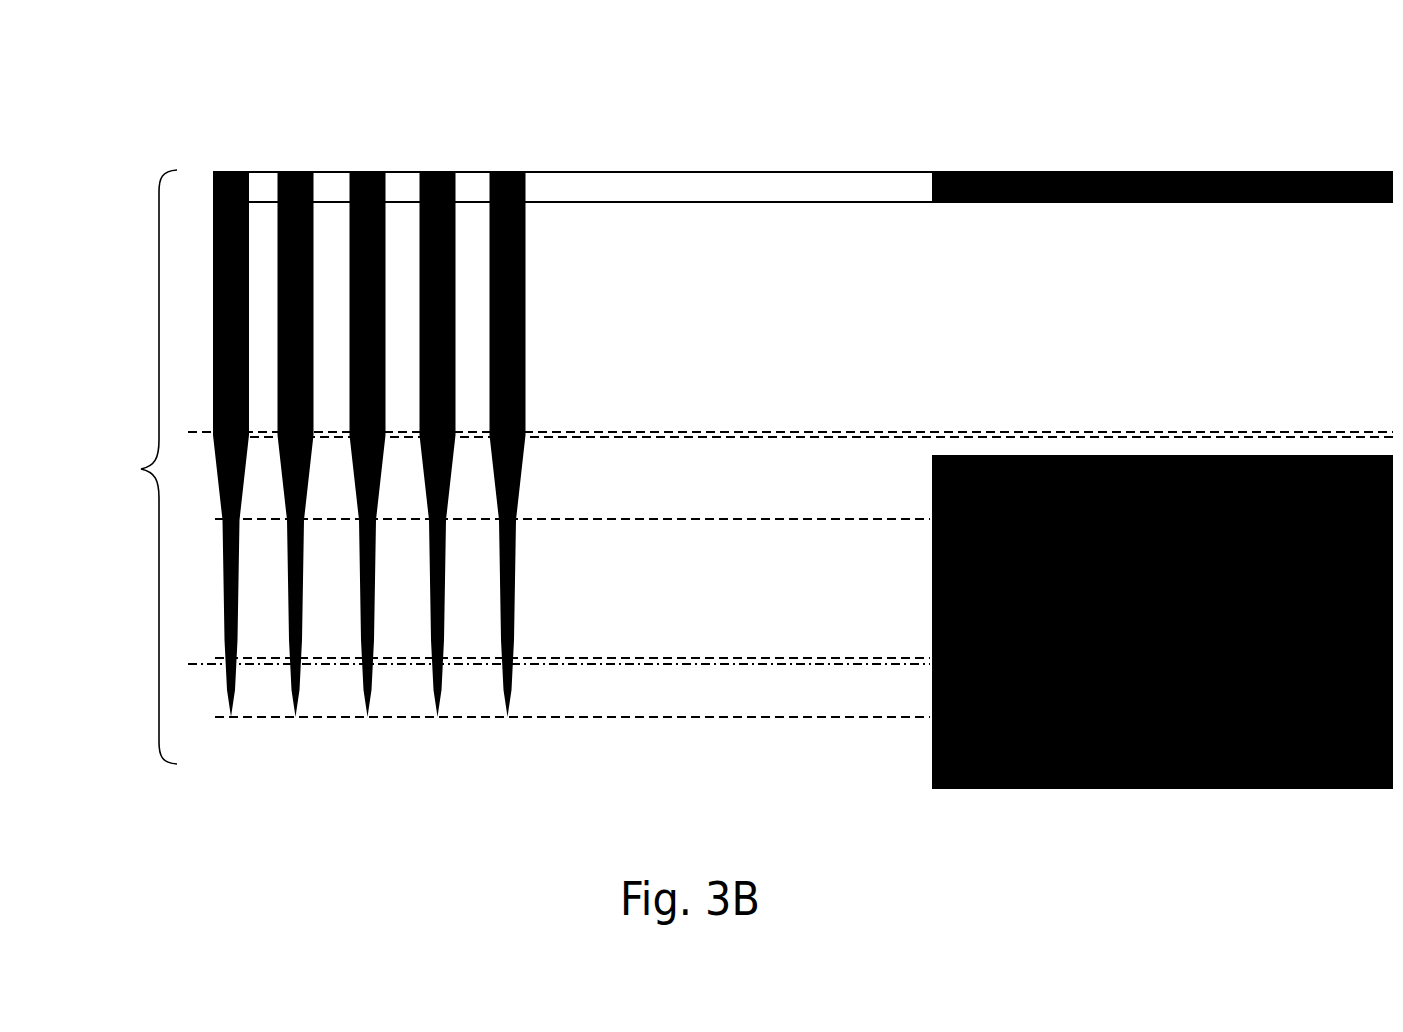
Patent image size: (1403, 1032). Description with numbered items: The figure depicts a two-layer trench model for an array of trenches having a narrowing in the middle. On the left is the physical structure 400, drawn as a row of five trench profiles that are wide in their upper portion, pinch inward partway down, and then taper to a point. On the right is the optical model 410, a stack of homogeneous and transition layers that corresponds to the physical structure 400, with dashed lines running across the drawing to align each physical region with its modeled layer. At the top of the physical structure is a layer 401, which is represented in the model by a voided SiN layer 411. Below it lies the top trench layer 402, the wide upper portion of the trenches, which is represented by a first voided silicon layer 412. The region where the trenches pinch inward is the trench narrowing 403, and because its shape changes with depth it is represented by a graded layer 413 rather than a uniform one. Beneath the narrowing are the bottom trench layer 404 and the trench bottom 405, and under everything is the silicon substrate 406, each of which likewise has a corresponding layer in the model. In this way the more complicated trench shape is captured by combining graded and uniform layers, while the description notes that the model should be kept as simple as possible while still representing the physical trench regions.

The physical structure 400 is at (313, 411).
The layer 401 is at (803, 190).
The top trench layer 402 is at (790, 374).
The trench narrowing 403 is at (572, 486).
The bottom trench layer 404 is at (559, 612).
The trench bottom 405 is at (572, 695).
The silicon substrate 406 is at (572, 753).
The optical model 410 is at (1162, 405).
The voided SiN layer 411 is at (1162, 189).
The first voided silicon layer 412 is at (1162, 328).
The graded layer 413 is at (1162, 622).